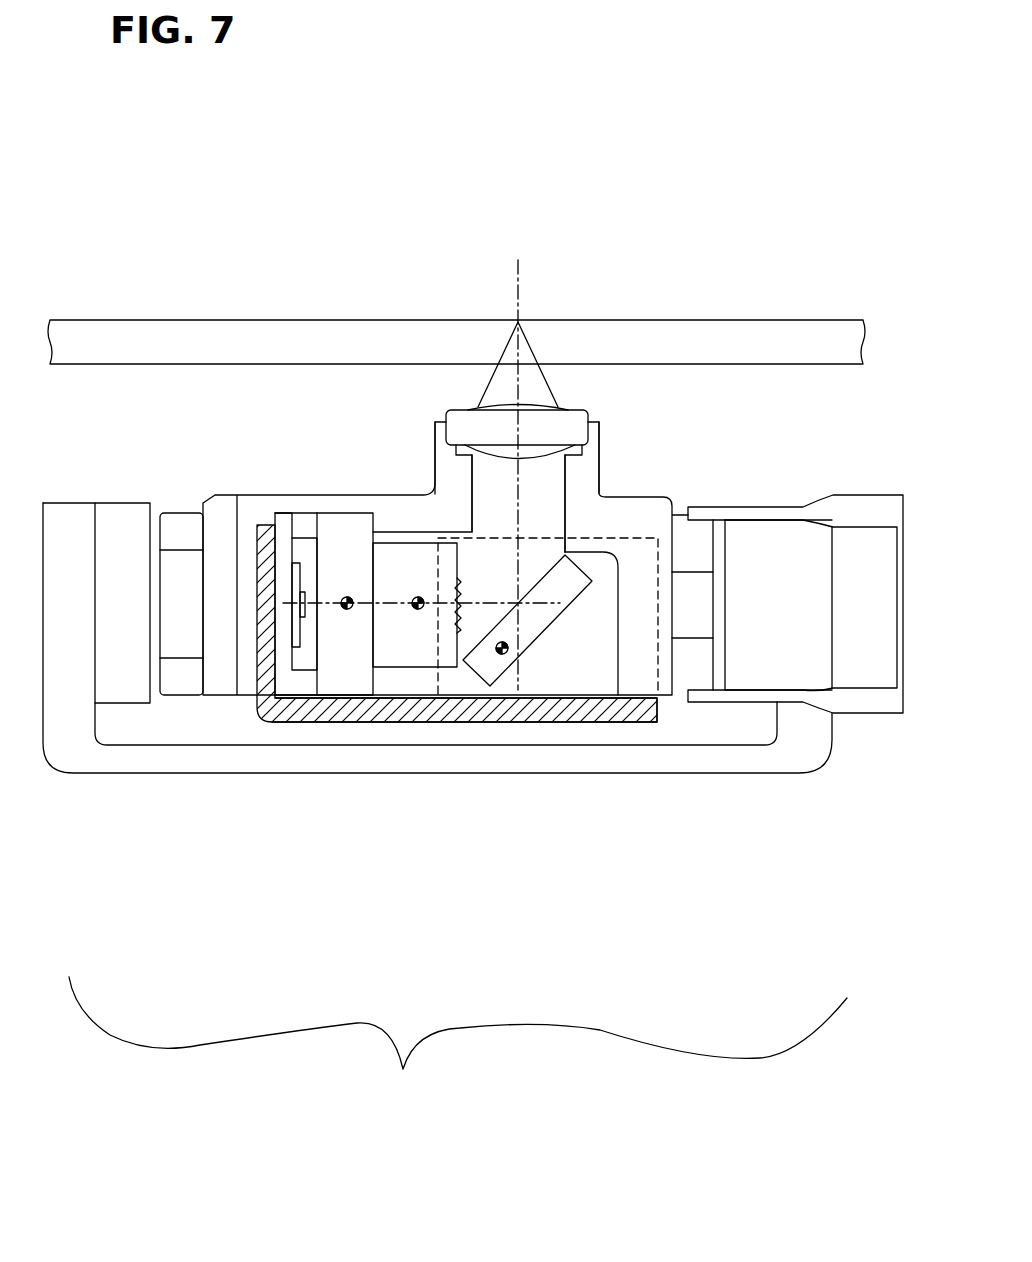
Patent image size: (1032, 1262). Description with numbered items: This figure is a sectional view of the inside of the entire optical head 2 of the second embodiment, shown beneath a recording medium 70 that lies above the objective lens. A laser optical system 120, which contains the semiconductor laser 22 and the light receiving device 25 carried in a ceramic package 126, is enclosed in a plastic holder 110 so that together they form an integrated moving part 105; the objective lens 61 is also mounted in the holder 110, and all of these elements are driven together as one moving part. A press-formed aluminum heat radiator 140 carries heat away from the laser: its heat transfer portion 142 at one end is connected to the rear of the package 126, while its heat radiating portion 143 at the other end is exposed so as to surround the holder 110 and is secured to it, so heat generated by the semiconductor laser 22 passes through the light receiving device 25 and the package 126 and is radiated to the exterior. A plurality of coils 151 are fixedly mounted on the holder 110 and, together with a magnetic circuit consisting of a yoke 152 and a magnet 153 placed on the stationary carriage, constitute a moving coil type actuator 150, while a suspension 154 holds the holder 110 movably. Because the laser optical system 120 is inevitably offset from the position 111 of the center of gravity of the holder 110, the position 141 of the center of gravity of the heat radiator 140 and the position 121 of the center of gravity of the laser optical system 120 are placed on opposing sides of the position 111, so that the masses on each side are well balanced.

The optical head 2 is at (458, 1043).
The semiconductor laser 22 is at (302, 696).
The light receiving device 25 is at (308, 533).
The objective lens 61 is at (566, 410).
The optical disk 70 is at (317, 326).
The integrated moving part 105 is at (227, 707).
The holder 110 is at (592, 507).
The position of the center of gravity of the holder 111 is at (418, 612).
The laser optical system 120 is at (352, 530).
The position of the center of gravity of the laser optical system 121 is at (346, 610).
The package 126 is at (278, 518).
The heat radiator 140 is at (538, 732).
The position of the center of gravity of the heat radiator 141 is at (500, 656).
The heat transfer portion 142 is at (260, 528).
The heat radiating portion 143 is at (582, 716).
The moving coil type actuator 150 is at (795, 553).
The coils 151 is at (177, 518).
The yoke 152 is at (800, 778).
The magnet 153 is at (123, 518).
The suspension 154 is at (755, 507).